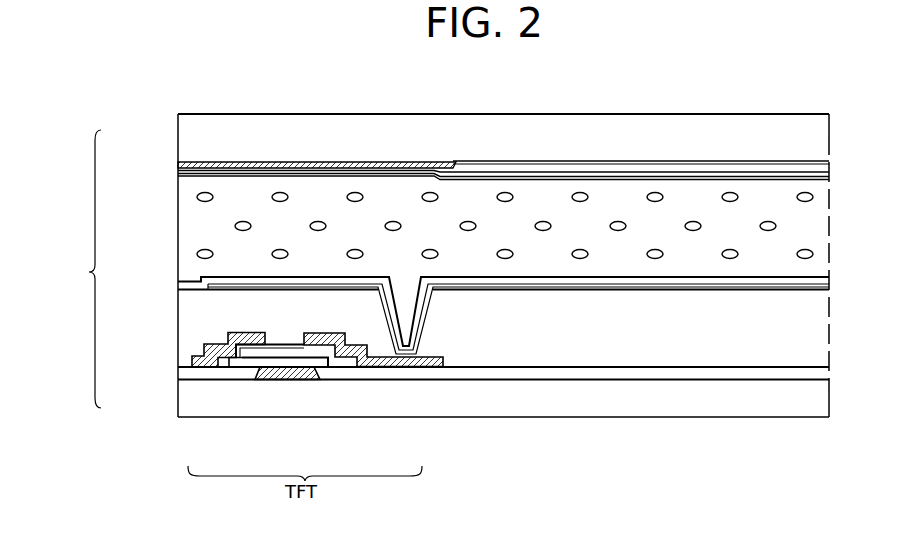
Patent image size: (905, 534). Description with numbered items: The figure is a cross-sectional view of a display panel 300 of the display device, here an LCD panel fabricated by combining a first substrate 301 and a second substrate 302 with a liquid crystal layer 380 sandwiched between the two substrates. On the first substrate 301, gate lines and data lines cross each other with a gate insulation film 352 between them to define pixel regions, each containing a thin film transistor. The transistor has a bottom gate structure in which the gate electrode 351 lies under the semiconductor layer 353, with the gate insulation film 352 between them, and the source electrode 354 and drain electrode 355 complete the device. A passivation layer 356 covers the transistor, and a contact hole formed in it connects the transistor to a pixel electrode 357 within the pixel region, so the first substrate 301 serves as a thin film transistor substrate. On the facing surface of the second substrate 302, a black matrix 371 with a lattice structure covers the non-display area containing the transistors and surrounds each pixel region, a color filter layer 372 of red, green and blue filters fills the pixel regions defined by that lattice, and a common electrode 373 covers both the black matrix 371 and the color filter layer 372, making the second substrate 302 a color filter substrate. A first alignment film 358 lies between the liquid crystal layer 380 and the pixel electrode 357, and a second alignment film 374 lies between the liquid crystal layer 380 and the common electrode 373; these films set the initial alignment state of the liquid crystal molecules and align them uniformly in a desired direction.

The display panel 300 is at (76, 269).
The first substrate 301 is at (185, 398).
The second substrate 302 is at (182, 140).
The gate electrode 351 is at (288, 379).
The gate insulation film 352 is at (185, 370).
The semiconductor layer 353 is at (230, 358).
The source electrode 354 is at (203, 367).
The drain electrode 355 is at (408, 366).
The passivation layer 356 is at (185, 331).
The pixel electrode 357 is at (211, 289).
The first alignment film 358 is at (212, 275).
The black matrix 371 is at (333, 162).
The color filter layer 372 is at (488, 164).
The common electrode 373 is at (581, 171).
The second alignment film 374 is at (629, 176).
The liquid crystal layer 380 is at (183, 214).